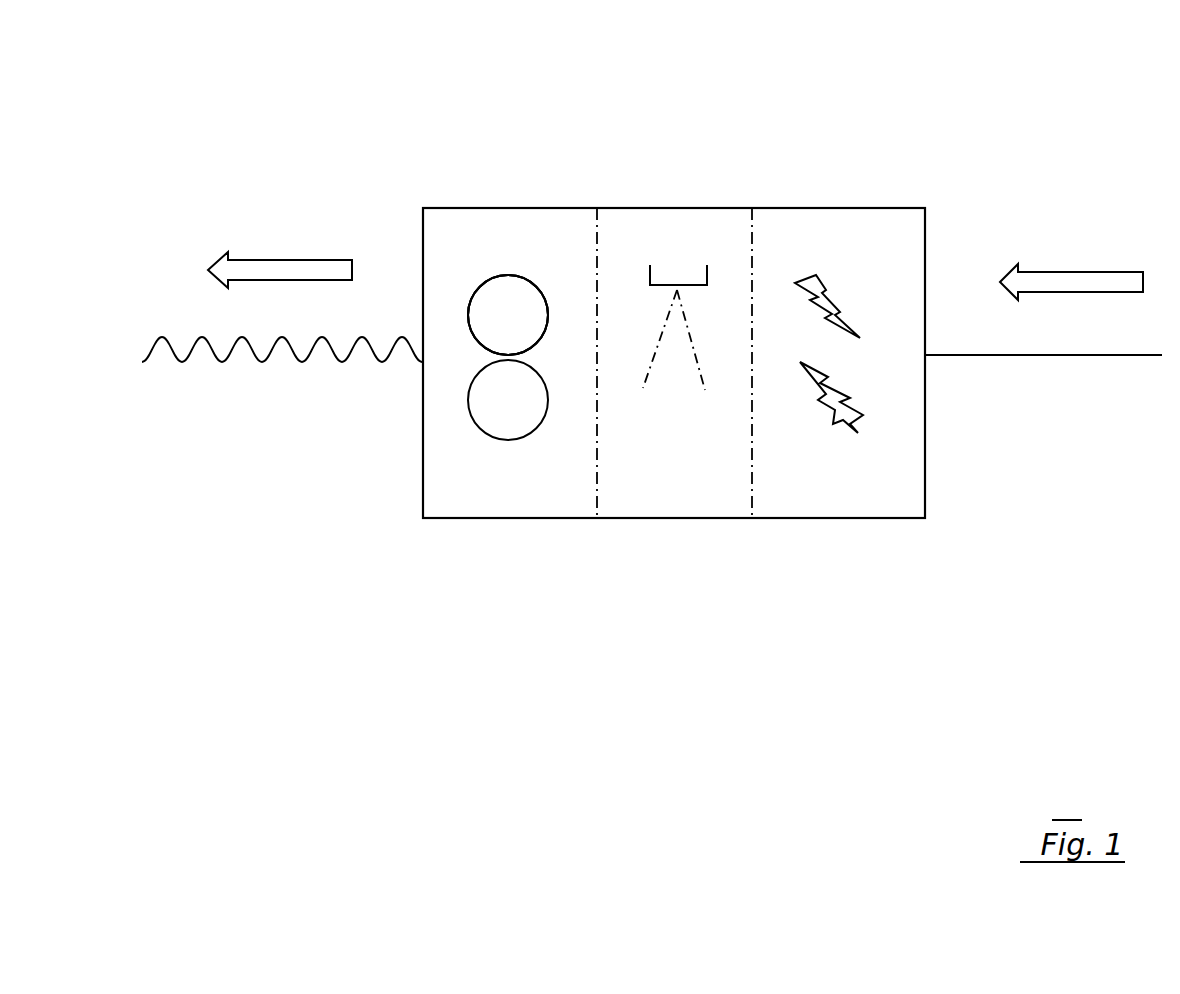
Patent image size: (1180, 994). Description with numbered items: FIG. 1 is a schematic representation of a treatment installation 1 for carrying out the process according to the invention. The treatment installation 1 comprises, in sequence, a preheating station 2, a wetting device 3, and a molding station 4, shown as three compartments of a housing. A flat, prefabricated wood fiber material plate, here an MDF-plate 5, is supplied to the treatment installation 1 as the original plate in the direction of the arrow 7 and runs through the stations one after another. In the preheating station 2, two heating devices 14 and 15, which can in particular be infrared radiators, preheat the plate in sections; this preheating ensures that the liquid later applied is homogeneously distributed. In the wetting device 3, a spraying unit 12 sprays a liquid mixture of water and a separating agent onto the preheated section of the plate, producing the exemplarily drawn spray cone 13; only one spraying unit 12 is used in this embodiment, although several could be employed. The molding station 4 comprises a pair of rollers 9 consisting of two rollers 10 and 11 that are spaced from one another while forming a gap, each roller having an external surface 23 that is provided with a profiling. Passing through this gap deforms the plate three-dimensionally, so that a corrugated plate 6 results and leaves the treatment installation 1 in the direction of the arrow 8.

The treatment installation 1 is at (633, 648).
The preheating station 2 is at (810, 497).
The wetting device 3 is at (618, 497).
The molding station 4 is at (470, 495).
The MDF-plate 5 is at (1057, 355).
The corrugated plate 6 is at (227, 362).
The arrow 7 is at (1071, 269).
The arrow 8 is at (280, 255).
The pair of rollers 9 is at (515, 322).
The roller 10 is at (487, 320).
The roller 11 is at (490, 412).
The spraying unit 12 is at (667, 272).
The spray cone 13 is at (672, 357).
The heating device 14 is at (828, 272).
The heating device 15 is at (845, 418).
The external surface 23 is at (500, 275).